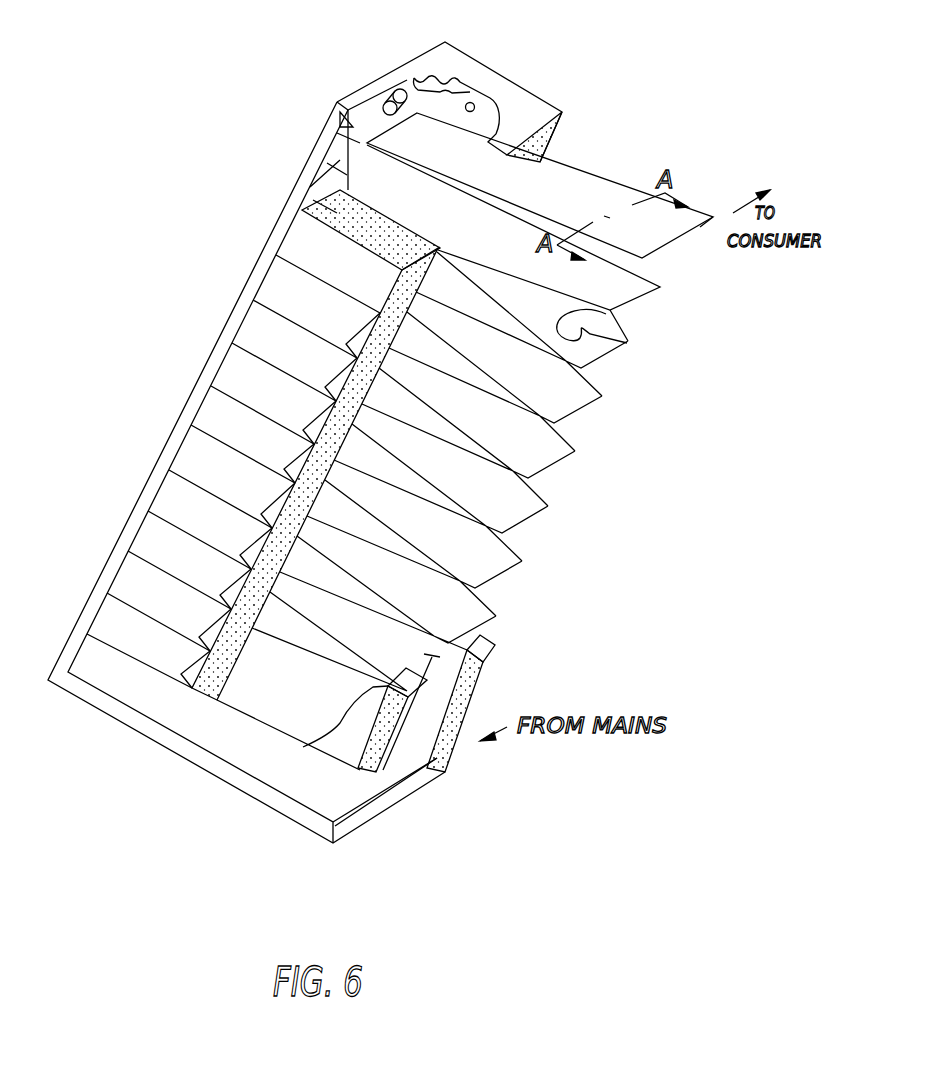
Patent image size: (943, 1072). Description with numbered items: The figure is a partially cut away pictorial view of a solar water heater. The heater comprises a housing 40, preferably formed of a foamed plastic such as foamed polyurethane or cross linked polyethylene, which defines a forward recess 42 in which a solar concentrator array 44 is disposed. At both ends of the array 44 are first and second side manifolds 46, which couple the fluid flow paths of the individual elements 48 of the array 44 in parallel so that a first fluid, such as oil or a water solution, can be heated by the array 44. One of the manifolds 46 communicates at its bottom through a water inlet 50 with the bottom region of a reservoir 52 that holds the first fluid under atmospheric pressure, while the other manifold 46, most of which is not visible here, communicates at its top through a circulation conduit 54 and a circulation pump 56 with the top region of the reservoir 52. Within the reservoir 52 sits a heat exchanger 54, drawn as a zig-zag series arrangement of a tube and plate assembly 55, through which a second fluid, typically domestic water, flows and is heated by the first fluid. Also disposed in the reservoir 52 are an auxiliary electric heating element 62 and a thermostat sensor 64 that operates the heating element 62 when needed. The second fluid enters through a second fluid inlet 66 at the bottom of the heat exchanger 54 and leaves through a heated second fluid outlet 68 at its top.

The housing 40 is at (460, 65).
The forward recess 42 is at (348, 112).
The solar concentrator array 44 is at (292, 248).
The side manifolds 46 is at (443, 772).
The individual elements 48 is at (317, 237).
The water inlet 50 is at (377, 790).
The reservoir 52 is at (432, 708).
The heat exchanger 54 is at (363, 137).
The top plate 55 is at (546, 196).
The circulation pump 56 is at (400, 100).
The auxiliary electric heating element 62 is at (627, 320).
The thermostat sensor 64 is at (477, 104).
The second fluid inlet 66 is at (467, 748).
The heated second fluid outlet 68 is at (698, 227).